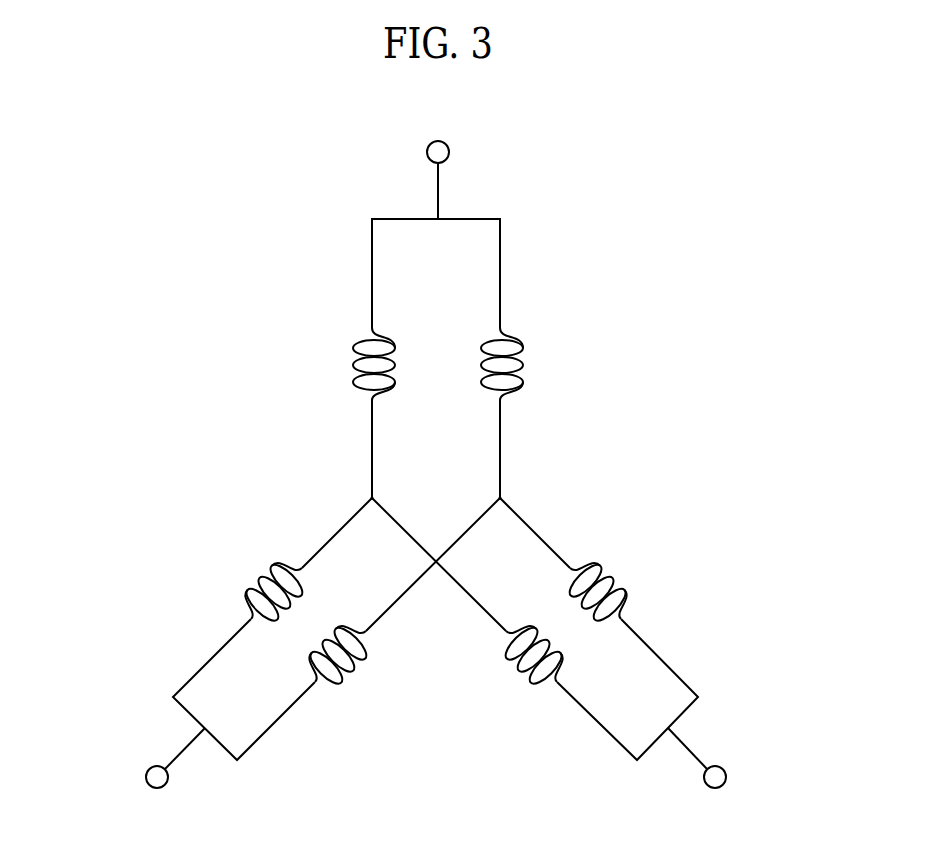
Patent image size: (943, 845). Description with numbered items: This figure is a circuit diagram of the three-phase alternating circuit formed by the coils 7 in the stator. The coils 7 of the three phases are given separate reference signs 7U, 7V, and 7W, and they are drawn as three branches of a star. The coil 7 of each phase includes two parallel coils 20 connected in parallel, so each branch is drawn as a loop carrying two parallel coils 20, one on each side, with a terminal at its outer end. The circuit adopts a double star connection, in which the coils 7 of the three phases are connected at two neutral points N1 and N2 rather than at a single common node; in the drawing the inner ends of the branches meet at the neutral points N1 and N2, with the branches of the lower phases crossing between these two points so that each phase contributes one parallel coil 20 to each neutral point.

The coil 7 is at (435, 464).
The U-phase coil 7U is at (540, 277).
The V-phase coil 7V is at (682, 628).
The W-phase coil 7W is at (192, 628).
The parallel coil 20 is at (439, 515).
The neutral point N1 is at (353, 491).
The neutral point N2 is at (520, 491).